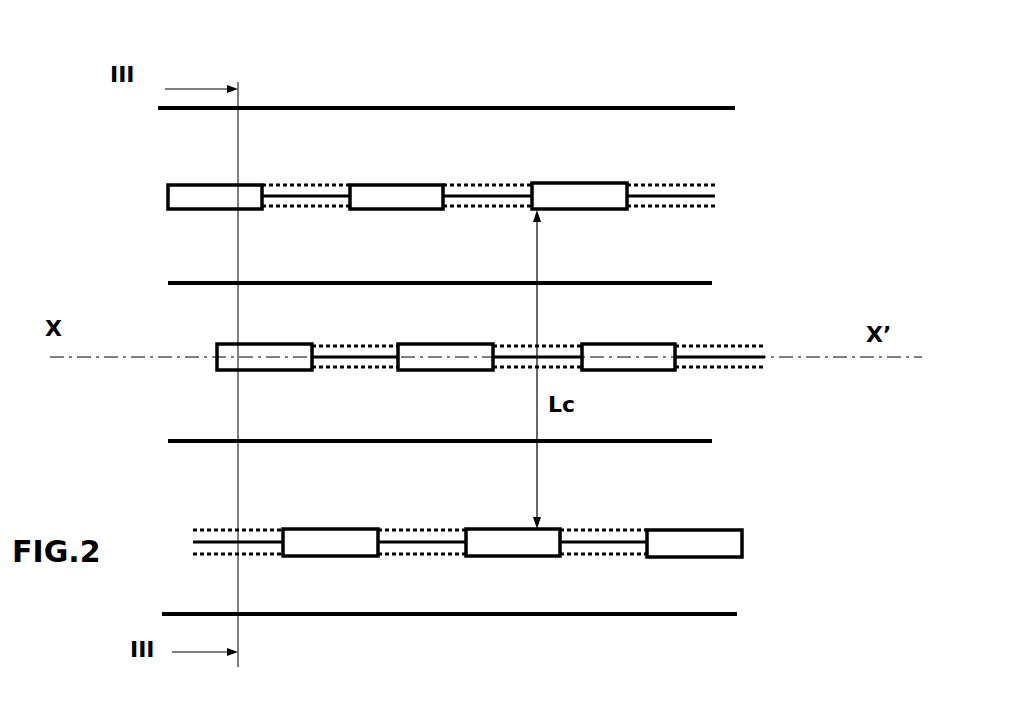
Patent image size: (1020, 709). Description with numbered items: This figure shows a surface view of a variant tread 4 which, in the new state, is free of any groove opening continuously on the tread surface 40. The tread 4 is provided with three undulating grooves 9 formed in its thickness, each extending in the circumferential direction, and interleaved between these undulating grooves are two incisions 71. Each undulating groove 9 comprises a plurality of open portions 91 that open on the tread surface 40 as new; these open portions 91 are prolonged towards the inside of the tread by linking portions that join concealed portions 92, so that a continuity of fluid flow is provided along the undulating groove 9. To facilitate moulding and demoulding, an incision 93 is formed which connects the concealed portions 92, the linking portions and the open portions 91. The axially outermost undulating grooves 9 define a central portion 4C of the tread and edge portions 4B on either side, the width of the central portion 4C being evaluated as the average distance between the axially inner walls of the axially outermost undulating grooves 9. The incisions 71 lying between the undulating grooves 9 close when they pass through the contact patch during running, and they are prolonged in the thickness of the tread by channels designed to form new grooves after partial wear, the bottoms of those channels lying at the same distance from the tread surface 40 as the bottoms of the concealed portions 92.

The tread 4 is at (640, 122).
The edge portion 4B is at (703, 140).
The central portion 4C is at (707, 395).
The undulating groove 9 is at (463, 285).
The tread surface 40 is at (579, 172).
The incision 71 is at (193, 282).
The open portion 91 is at (220, 197).
The concealed portion 92 is at (477, 190).
The incision 93 is at (303, 197).